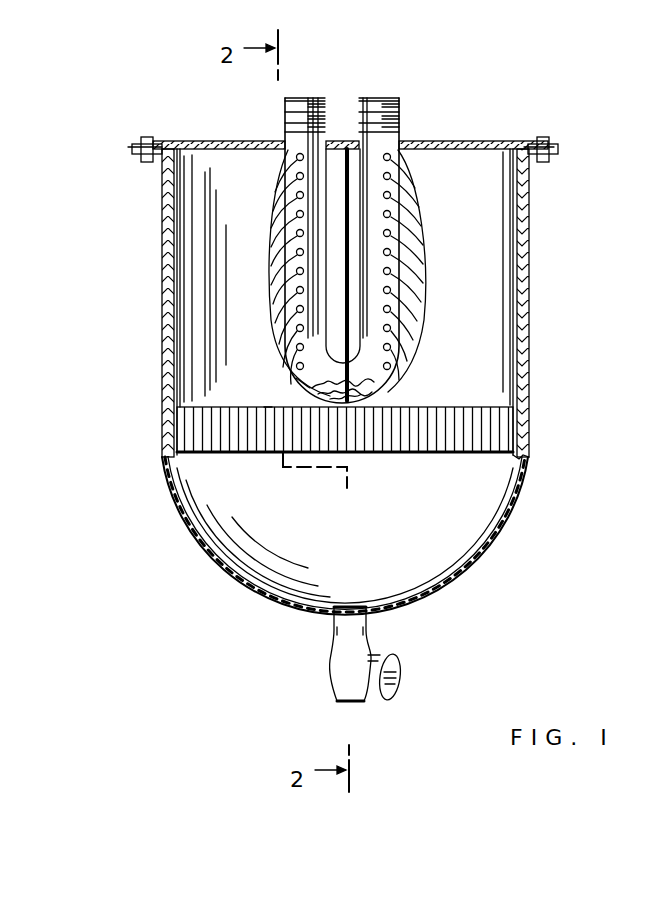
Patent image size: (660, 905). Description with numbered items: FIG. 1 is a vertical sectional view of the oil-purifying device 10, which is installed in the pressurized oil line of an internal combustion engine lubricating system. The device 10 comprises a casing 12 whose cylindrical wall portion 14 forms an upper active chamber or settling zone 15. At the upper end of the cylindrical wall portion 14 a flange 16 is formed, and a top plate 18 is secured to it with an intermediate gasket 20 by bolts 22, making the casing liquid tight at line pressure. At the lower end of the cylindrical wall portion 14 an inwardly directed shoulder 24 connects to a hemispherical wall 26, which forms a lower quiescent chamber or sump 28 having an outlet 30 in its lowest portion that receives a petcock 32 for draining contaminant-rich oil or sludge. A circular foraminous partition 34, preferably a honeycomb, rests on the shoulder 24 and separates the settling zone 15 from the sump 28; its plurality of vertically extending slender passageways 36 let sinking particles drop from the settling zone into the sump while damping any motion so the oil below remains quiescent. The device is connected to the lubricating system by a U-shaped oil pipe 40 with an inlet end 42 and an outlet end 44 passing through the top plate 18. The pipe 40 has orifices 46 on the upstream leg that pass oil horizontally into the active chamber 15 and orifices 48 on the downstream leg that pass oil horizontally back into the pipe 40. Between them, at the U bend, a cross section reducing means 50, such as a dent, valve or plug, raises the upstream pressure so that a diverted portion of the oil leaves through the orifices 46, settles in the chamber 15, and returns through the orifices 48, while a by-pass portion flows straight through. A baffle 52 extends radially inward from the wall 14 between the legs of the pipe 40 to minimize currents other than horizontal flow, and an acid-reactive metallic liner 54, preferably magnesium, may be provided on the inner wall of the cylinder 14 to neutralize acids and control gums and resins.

The device 10 is at (195, 556).
The casing 12 is at (161, 397).
The cylindrical wall portion 14 is at (160, 282).
The upper active chamber 15 is at (250, 210).
The flange 16 is at (150, 158).
The top plate 18 is at (198, 142).
The gasket 20 is at (132, 148).
The bolts 22 is at (146, 138).
The shoulder 24 is at (529, 462).
The hemispherical wall 26 is at (518, 520).
The sump 28 is at (268, 572).
The outlet 30 is at (330, 623).
The petcock 32 is at (338, 693).
The foraminous partition 34 is at (264, 406).
The passageways 36 is at (408, 447).
The oil pipe 40 is at (274, 128).
The inlet end 42 is at (306, 98).
The outlet end 44 is at (390, 98).
The orifices 46 is at (277, 270).
The orifices 48 is at (406, 266).
The cross section reducing means 50 is at (397, 372).
The baffle 52 is at (300, 386).
The liner 54 is at (514, 364).